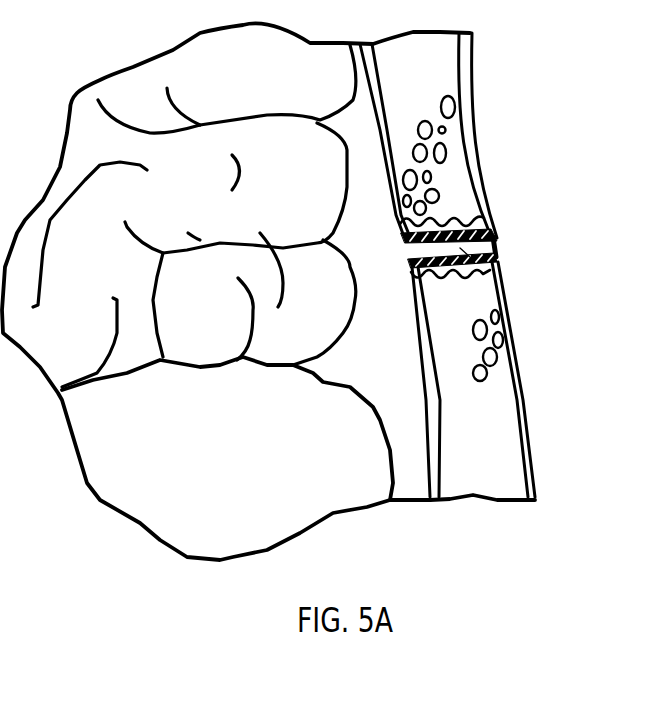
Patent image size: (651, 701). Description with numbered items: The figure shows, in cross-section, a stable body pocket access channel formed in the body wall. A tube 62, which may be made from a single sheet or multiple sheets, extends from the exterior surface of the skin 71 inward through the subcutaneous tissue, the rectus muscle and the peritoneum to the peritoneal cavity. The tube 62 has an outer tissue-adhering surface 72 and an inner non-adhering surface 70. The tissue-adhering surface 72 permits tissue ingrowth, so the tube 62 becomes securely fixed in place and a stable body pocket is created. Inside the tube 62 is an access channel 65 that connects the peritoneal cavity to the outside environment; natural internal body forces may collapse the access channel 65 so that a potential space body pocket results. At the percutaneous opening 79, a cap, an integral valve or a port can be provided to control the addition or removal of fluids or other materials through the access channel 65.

The skin 71 is at (484, 153).
The outer tissue-adhering surface 72 is at (482, 216).
The inner non-adhering surface 70 is at (500, 241).
The percutaneous opening 79 is at (498, 246).
The tube 62 is at (497, 260).
The access channel 65 is at (433, 249).